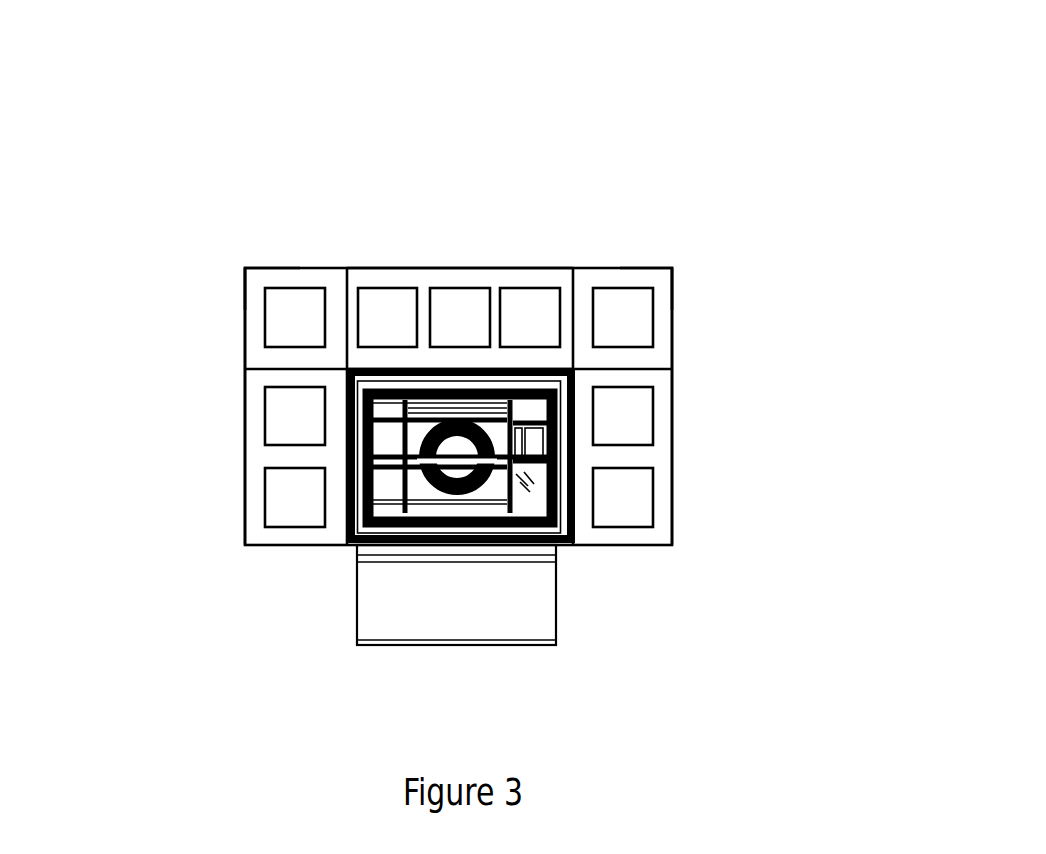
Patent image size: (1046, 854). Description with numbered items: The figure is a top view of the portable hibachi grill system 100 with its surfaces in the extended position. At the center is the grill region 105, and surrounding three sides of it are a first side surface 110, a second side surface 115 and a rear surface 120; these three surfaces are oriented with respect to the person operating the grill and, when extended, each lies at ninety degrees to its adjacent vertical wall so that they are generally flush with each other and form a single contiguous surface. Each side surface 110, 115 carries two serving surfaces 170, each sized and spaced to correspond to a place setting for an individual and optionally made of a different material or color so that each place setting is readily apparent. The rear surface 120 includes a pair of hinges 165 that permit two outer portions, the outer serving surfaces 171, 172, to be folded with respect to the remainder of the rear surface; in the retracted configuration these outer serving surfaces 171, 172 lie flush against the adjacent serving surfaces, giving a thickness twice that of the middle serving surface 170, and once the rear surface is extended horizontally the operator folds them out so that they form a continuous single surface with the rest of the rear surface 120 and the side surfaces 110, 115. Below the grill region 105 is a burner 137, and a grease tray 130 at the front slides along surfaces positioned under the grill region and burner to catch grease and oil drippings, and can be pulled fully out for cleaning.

The hibachi grill system 100 is at (837, 38).
The grill region 105 is at (547, 407).
The first side surface 110 is at (660, 458).
The second side surface 115 is at (245, 403).
The rear surface 120 is at (502, 268).
The grease tray 130 is at (533, 618).
The burner 137 is at (437, 422).
The hinges 165 is at (347, 276).
The serving surfaces 170 is at (292, 305).
The outer serving surface 171 is at (673, 270).
The outer serving surface 172 is at (243, 296).